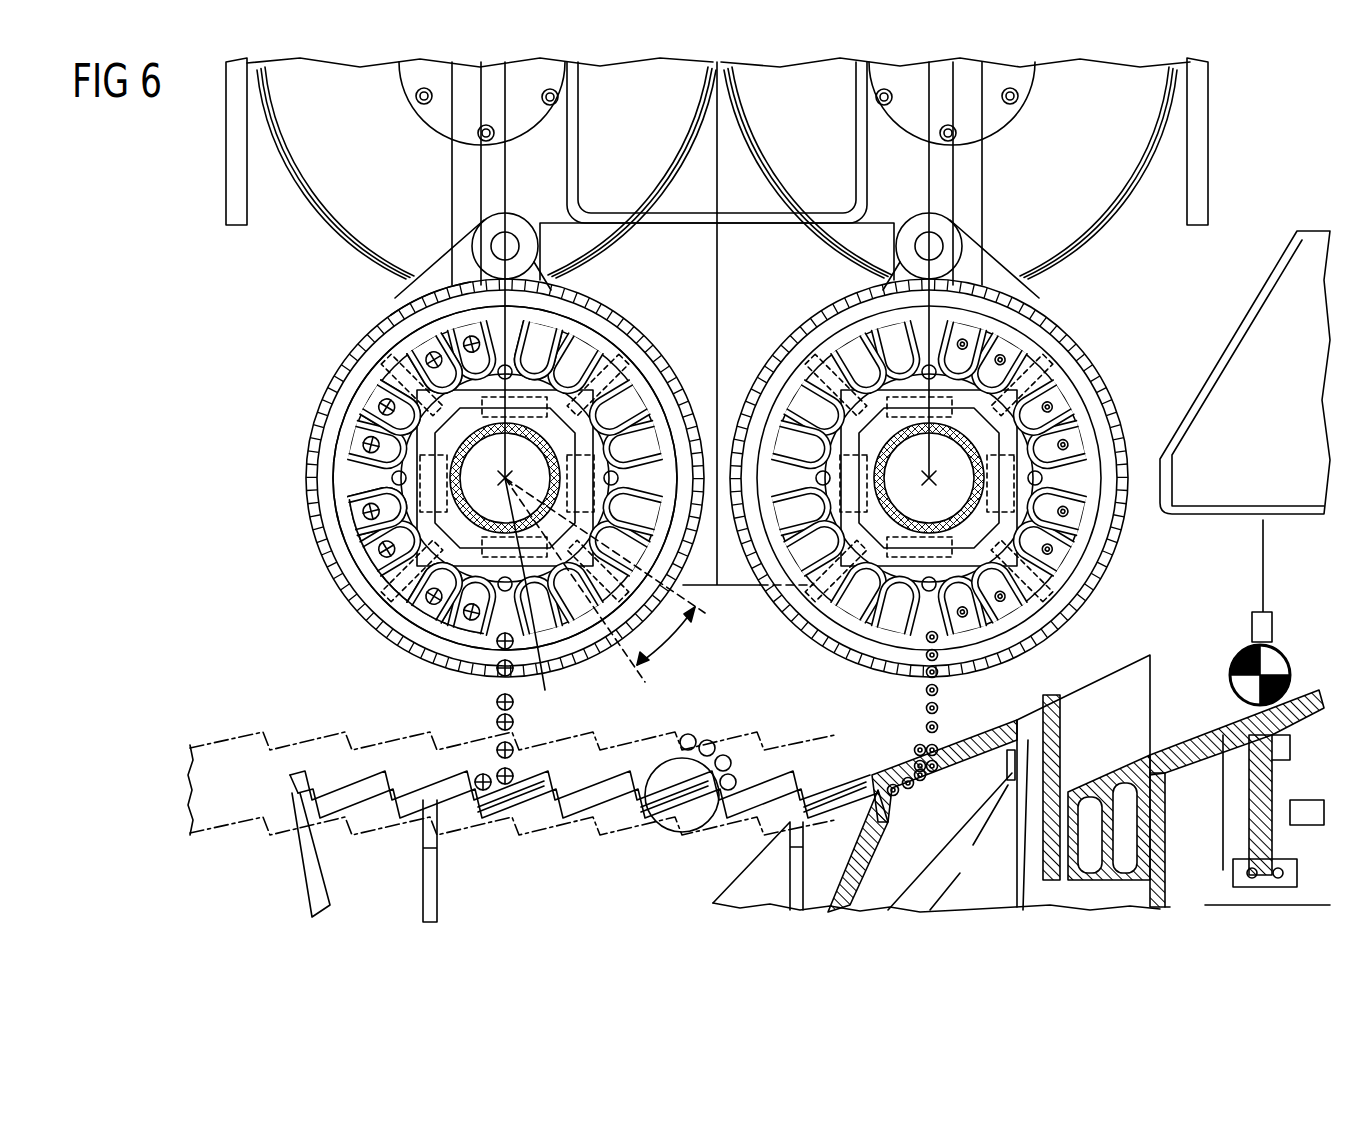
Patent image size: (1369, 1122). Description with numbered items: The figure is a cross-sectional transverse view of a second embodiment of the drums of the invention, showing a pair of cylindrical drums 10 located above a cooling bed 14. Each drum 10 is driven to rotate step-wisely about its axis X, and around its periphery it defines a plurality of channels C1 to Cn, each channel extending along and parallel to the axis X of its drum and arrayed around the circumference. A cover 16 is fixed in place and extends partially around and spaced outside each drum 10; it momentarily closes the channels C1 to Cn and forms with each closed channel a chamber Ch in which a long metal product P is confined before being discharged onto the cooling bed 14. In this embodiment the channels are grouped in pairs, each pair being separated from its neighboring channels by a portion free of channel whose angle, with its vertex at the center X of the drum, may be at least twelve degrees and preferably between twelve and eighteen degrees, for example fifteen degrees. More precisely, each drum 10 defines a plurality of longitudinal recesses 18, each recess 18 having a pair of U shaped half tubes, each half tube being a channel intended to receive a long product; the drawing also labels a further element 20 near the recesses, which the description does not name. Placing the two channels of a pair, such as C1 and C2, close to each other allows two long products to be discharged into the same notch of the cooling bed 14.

The drum 10 is at (296, 345).
The cooling bed 14 is at (340, 790).
The cover 16 is at (330, 480).
The longitudinal recess 18 is at (402, 627).
The pocket 20 is at (428, 598).
The channel C1 is at (436, 308).
The channel C2 is at (465, 335).
The channel Cn is at (540, 333).
The long metal product P is at (372, 402).
The chamber Ch is at (362, 515).
The axis X is at (532, 601).